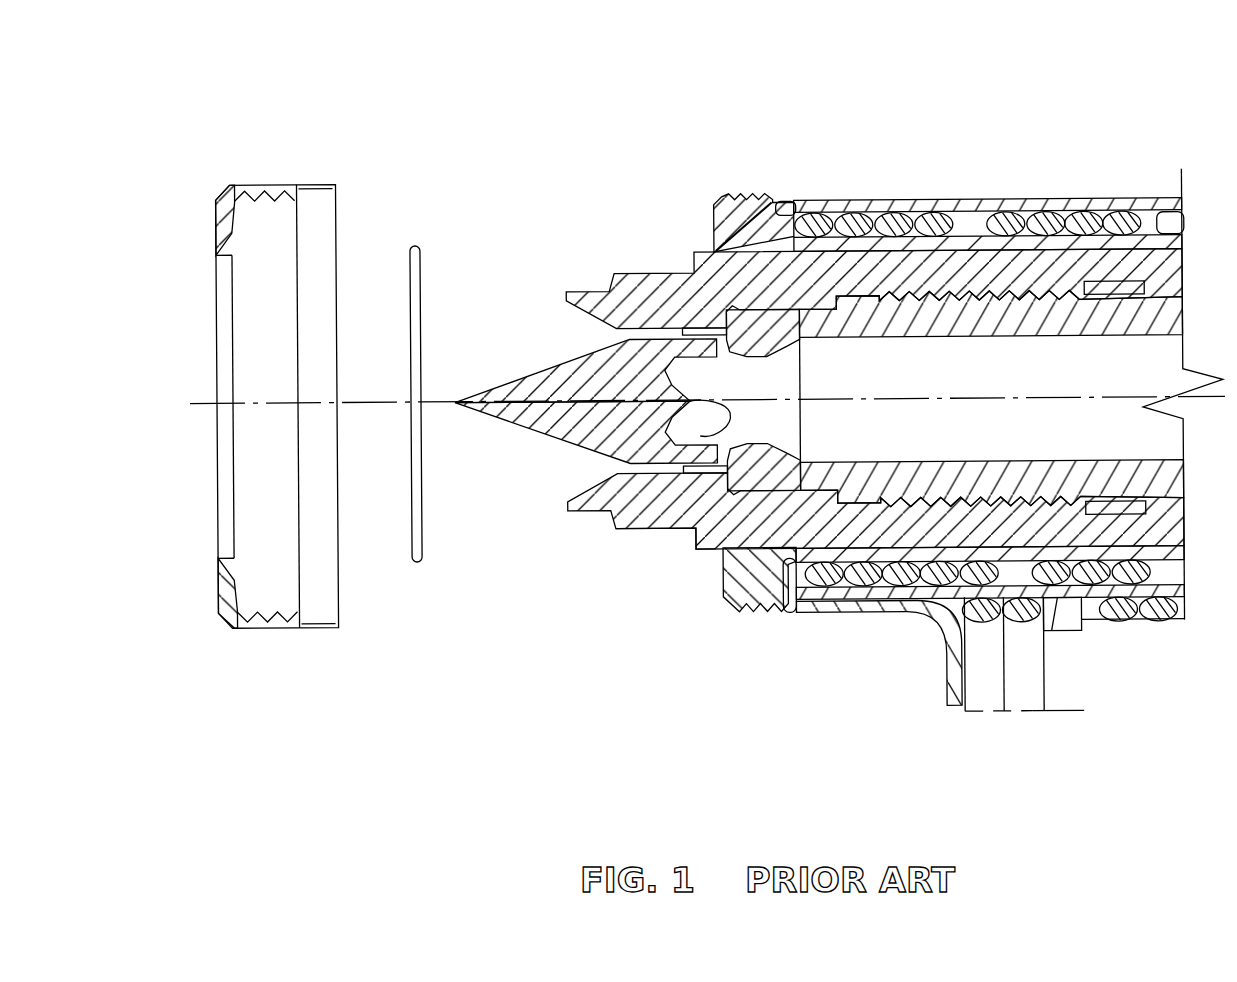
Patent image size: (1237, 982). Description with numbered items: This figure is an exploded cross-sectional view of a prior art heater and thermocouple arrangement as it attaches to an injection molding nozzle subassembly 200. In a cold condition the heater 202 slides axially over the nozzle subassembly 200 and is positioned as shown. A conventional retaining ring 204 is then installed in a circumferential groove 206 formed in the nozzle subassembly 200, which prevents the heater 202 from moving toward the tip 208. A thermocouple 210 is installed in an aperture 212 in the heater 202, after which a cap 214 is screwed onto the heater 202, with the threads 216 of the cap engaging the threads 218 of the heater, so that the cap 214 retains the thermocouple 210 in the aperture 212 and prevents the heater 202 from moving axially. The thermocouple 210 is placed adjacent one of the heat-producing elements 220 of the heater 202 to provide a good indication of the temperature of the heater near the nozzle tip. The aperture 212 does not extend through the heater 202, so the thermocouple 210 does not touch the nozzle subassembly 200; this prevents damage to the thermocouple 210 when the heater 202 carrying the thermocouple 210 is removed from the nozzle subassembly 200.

The nozzle subassembly 200 is at (638, 272).
The heater 202 is at (839, 390).
The retaining ring 204 is at (421, 249).
The circumferential groove 206 is at (715, 553).
The tip 208 is at (515, 442).
The thermocouple 210 is at (818, 630).
The aperture 212 is at (740, 612).
The cap 214 is at (277, 441).
The threads 216 is at (258, 201).
The threads 218 is at (750, 192).
The heat-producing elements 220 is at (958, 212).